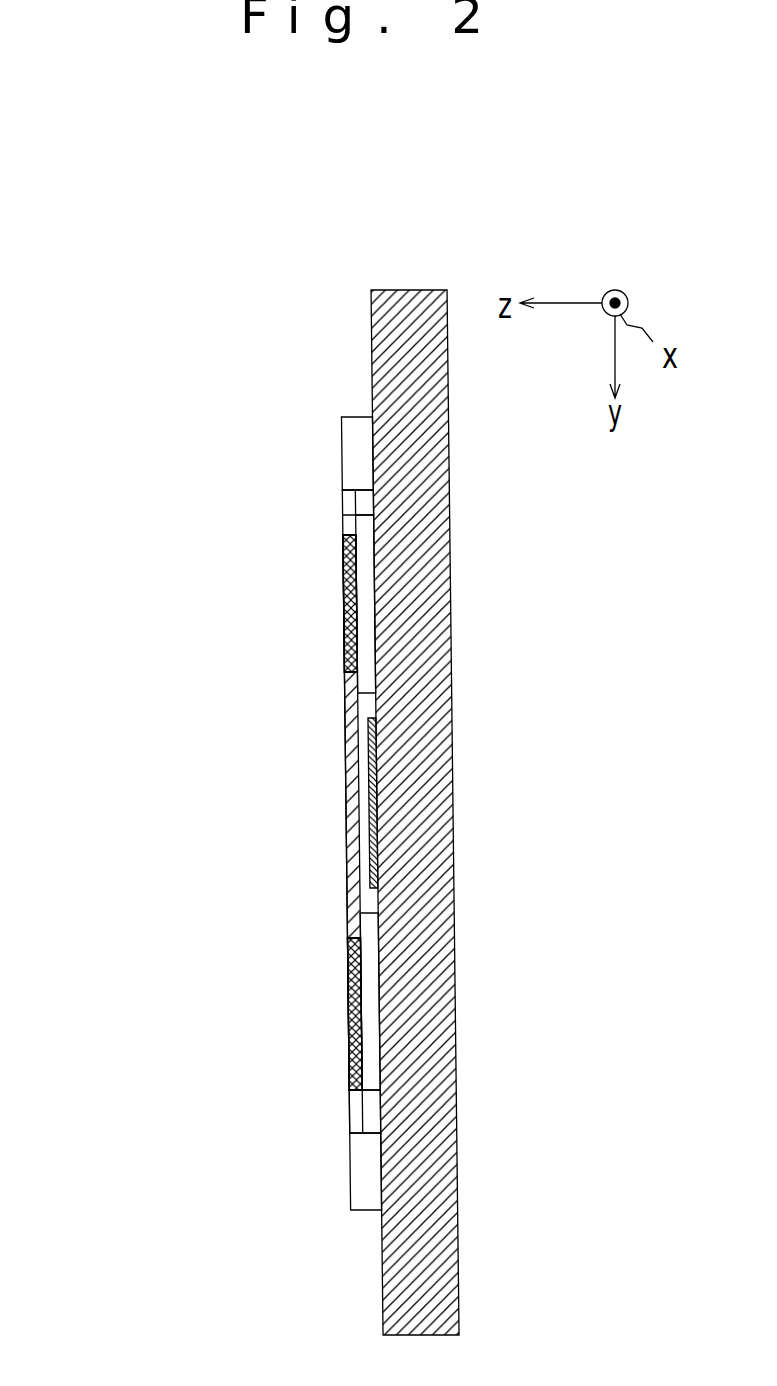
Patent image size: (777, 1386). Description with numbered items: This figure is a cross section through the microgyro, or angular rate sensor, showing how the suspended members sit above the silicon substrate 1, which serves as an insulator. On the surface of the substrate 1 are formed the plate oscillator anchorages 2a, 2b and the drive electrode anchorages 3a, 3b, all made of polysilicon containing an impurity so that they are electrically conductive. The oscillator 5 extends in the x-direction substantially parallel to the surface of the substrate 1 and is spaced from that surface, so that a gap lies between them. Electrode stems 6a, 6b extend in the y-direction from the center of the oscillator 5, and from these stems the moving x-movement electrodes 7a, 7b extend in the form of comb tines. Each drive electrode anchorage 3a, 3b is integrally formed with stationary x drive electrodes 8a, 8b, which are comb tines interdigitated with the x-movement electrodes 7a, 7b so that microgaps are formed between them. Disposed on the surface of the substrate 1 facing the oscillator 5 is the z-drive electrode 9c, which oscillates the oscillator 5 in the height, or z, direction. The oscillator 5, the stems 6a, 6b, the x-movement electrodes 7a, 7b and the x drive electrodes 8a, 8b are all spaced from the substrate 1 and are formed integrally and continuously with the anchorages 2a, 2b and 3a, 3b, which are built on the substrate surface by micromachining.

The silicon substrate 1 is at (455, 706).
The plate oscillator anchorage 2a is at (357, 453).
The plate oscillator anchorage 2b is at (350, 1175).
The drive electrode anchorage 3a is at (365, 650).
The drive electrode anchorage 3b is at (374, 1062).
The oscillator 5 is at (350, 757).
The electrode stem 6a is at (342, 600).
The electrode stem 6b is at (350, 1015).
The x-movement electrode 7a is at (322, 582).
The x drive electrode 8a is at (350, 603).
The x-movement electrode 7b is at (331, 964).
The x drive electrode 8b is at (354, 1014).
The z-drive electrode 9c is at (372, 806).